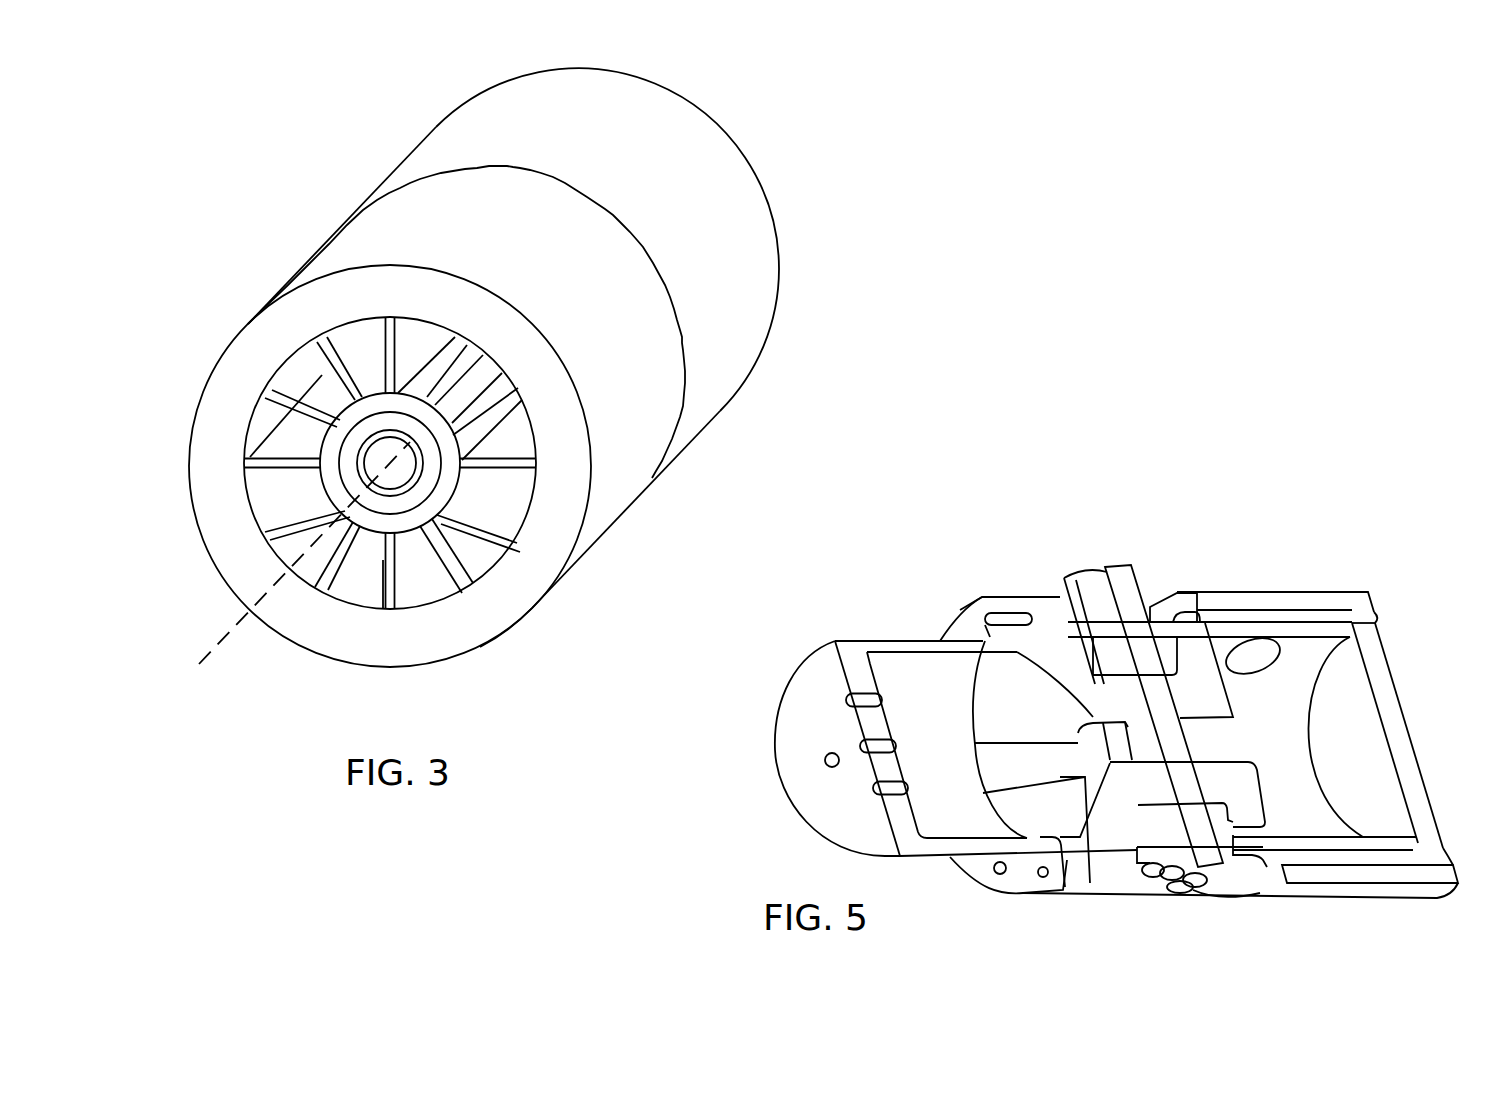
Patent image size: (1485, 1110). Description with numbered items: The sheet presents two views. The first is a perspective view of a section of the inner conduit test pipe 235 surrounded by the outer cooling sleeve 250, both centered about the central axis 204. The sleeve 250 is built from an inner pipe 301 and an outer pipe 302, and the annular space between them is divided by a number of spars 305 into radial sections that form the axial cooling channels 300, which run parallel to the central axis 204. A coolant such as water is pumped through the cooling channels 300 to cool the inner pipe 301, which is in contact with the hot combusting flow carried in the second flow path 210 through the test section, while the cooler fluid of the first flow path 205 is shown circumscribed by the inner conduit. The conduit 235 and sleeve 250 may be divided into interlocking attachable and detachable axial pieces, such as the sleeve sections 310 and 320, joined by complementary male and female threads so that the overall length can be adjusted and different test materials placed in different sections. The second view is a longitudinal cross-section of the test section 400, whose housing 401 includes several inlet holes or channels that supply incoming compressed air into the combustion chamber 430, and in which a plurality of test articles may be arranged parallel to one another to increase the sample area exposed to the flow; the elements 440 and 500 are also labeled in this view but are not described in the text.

In FIG. 3, the central axis 204 is at (215, 650).
In FIG. 3, the first flow path 205 is at (545, 600).
In FIG. 3, the second flow path 210 is at (343, 475).
In FIG. 3, the inner conduit test pipe 235 is at (287, 360).
In FIG. 3, the outer cooling sleeve 250 is at (214, 378).
In FIG. 3, the axial cooling channels 300 is at (372, 592).
In FIG. 3, the inner pipe 301 is at (335, 443).
In FIG. 3, the outer pipe 302 is at (323, 290).
In FIG. 3, the spars 305 is at (396, 606).
In FIG. 3, the sleeve section 310 is at (624, 515).
In FIG. 3, the sleeve section 320 is at (730, 410).
In FIG. 5, the test section 400 is at (960, 912).
In FIG. 5, the housing 401 is at (1352, 898).
In FIG. 5, the combustion chamber 430 is at (920, 670).
In FIG. 5, the clamp bars 440 is at (1050, 592).
In FIG. 5, the end plate 500 is at (825, 763).